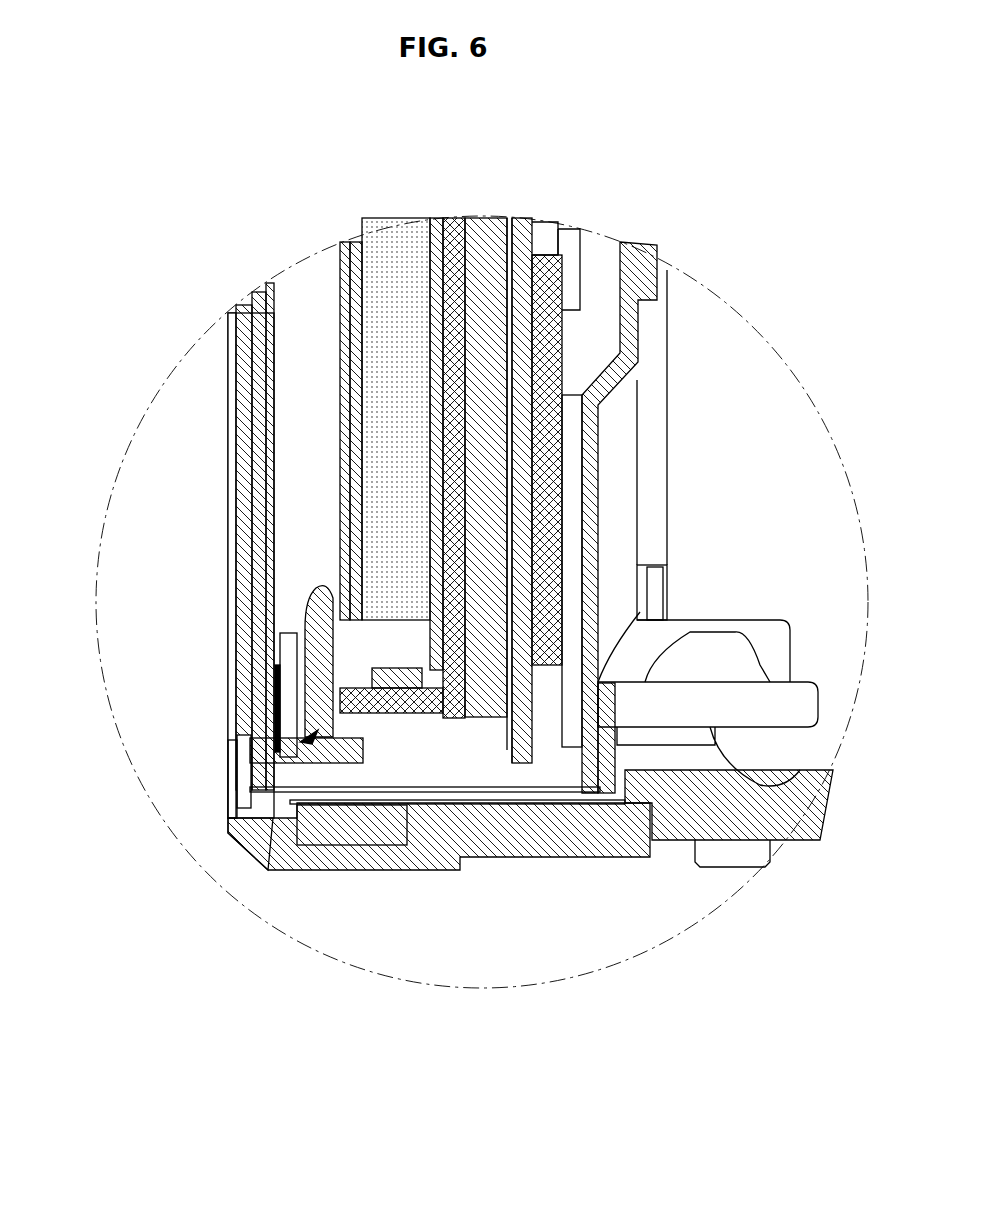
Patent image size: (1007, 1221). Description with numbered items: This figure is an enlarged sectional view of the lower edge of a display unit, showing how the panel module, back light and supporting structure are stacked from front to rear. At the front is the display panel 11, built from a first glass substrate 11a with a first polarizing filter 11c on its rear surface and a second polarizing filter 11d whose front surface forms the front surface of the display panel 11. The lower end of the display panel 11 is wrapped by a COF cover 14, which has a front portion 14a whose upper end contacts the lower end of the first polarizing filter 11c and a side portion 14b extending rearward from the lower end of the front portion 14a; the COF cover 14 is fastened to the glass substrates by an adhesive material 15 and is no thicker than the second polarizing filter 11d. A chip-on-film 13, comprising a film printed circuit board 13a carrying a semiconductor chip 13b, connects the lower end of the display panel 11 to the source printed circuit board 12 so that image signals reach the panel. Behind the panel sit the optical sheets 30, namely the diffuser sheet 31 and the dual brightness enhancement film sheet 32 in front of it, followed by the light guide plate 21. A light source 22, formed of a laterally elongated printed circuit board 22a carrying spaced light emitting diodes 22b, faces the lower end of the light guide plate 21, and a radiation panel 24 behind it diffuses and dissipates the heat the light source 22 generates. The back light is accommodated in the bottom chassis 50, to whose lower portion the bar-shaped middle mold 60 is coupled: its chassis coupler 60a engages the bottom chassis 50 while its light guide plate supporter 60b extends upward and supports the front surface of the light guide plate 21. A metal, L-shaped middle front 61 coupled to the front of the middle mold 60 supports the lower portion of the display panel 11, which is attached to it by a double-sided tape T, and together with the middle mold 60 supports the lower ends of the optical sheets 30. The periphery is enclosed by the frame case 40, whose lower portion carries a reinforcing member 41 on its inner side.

The display panel 11 is at (228, 480).
The first glass substrate 11a is at (245, 305).
The first polarizing filter 11c is at (270, 284).
The second polarizing filter 11d is at (228, 332).
The source printed circuit board 12 is at (550, 462).
The chip-on-film 13 is at (708, 528).
The film printed circuit board 13a is at (635, 583).
The semiconductor chip 13b is at (708, 688).
The COF cover 14 is at (151, 812).
The front portion 14a is at (230, 765).
The side portion 14b is at (230, 835).
The adhesive material 15 is at (237, 760).
The light guide plate 21 is at (425, 240).
The light source 22 is at (432, 822).
The printed circuit board 22a is at (440, 705).
The light emitting diode 22b is at (400, 682).
The radiation panel 24 is at (487, 230).
The optical sheets 30 is at (347, 367).
The diffuser sheet 31 is at (355, 242).
The dual brightness enhancement film sheet 32 is at (329, 397).
The frame case 40 is at (340, 870).
The reinforcing member 41 is at (556, 850).
The bottom chassis 50 is at (538, 228).
The middle mold 60 is at (273, 777).
The chassis coupler 60a is at (378, 805).
The light guide plate supporter 60b is at (302, 610).
The middle front 61 is at (290, 645).
The double-sided tape T is at (276, 690).